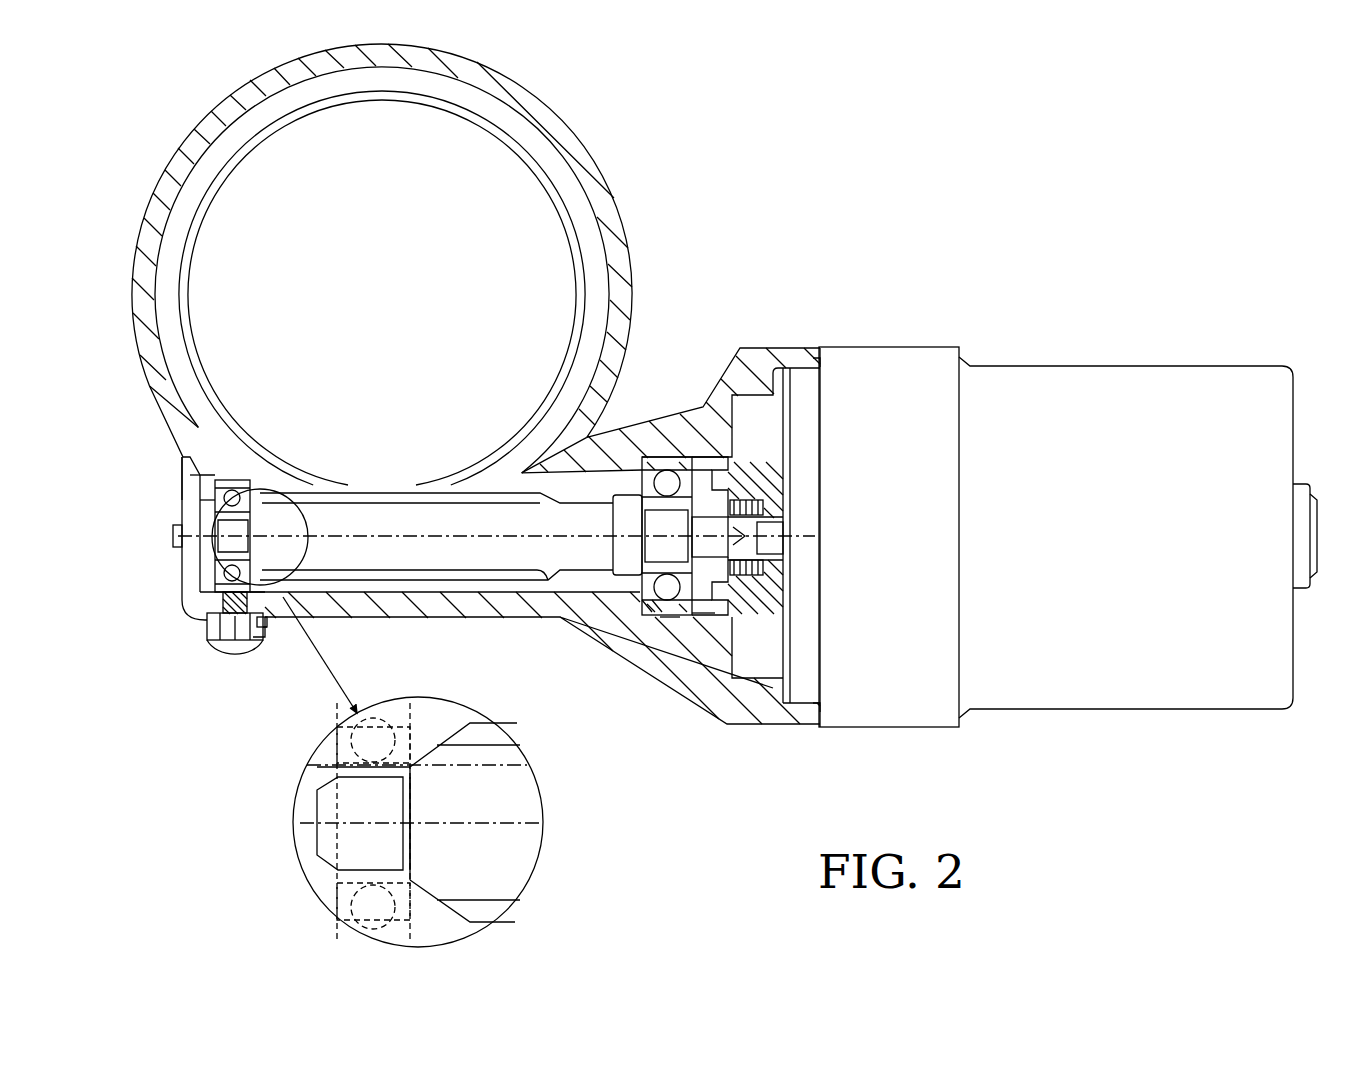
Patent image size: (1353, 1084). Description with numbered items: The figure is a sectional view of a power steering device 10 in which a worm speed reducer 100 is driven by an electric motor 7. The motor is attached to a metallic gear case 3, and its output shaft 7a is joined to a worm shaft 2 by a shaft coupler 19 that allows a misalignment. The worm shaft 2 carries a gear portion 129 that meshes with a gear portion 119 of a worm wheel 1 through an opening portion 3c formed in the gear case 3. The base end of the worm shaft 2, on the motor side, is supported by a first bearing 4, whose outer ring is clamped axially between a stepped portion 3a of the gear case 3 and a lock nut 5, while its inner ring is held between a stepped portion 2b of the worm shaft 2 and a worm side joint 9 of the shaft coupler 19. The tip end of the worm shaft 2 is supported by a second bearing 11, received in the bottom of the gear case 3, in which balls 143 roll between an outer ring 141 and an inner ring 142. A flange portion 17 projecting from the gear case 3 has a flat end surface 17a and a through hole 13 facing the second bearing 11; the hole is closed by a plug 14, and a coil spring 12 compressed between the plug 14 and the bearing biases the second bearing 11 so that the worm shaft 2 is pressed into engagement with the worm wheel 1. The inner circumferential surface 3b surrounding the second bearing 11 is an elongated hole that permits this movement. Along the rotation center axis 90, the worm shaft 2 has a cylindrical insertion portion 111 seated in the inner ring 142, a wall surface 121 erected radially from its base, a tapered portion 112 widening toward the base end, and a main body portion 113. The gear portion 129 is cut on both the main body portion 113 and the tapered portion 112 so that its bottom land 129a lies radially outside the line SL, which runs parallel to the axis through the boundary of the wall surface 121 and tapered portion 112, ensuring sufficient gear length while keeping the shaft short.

The worm wheel 1 is at (462, 470).
The worm shaft 2 is at (587, 547).
The stepped portion 2b is at (657, 600).
The gear case 3 is at (727, 717).
The stepped portion 3a is at (653, 612).
The inner circumferential surface 3b is at (232, 482).
The opening portion 3c is at (512, 472).
The first bearing 4 is at (667, 617).
The lock nut 5 is at (700, 613).
The electric motor 7 is at (1162, 415).
The output shaft 7a is at (777, 538).
The worm side joint 9 is at (745, 502).
The power steering device 10 is at (1152, 127).
The second bearing 11 is at (195, 575).
The coil spring 12 is at (210, 625).
The through hole 13 is at (245, 615).
The plug 14 is at (232, 630).
The flange portion 17 is at (265, 627).
The end surface 17a is at (262, 640).
The shaft coupler 19 is at (767, 617).
The rotation center axis 90 is at (380, 530).
The worm speed reducer 100 is at (680, 385).
The insertion portion 111 is at (173, 536).
The tapered portion 112 is at (222, 560).
The main body portion 113 is at (430, 555).
The gear portion 119 is at (402, 515).
The wall surface 121 is at (243, 495).
The gear portion 129 is at (475, 580).
The bottom land 129a is at (473, 737).
The outer ring 141 is at (178, 470).
The inner ring 142 is at (215, 505).
The balls 143 is at (200, 490).
The line SL is at (317, 767).